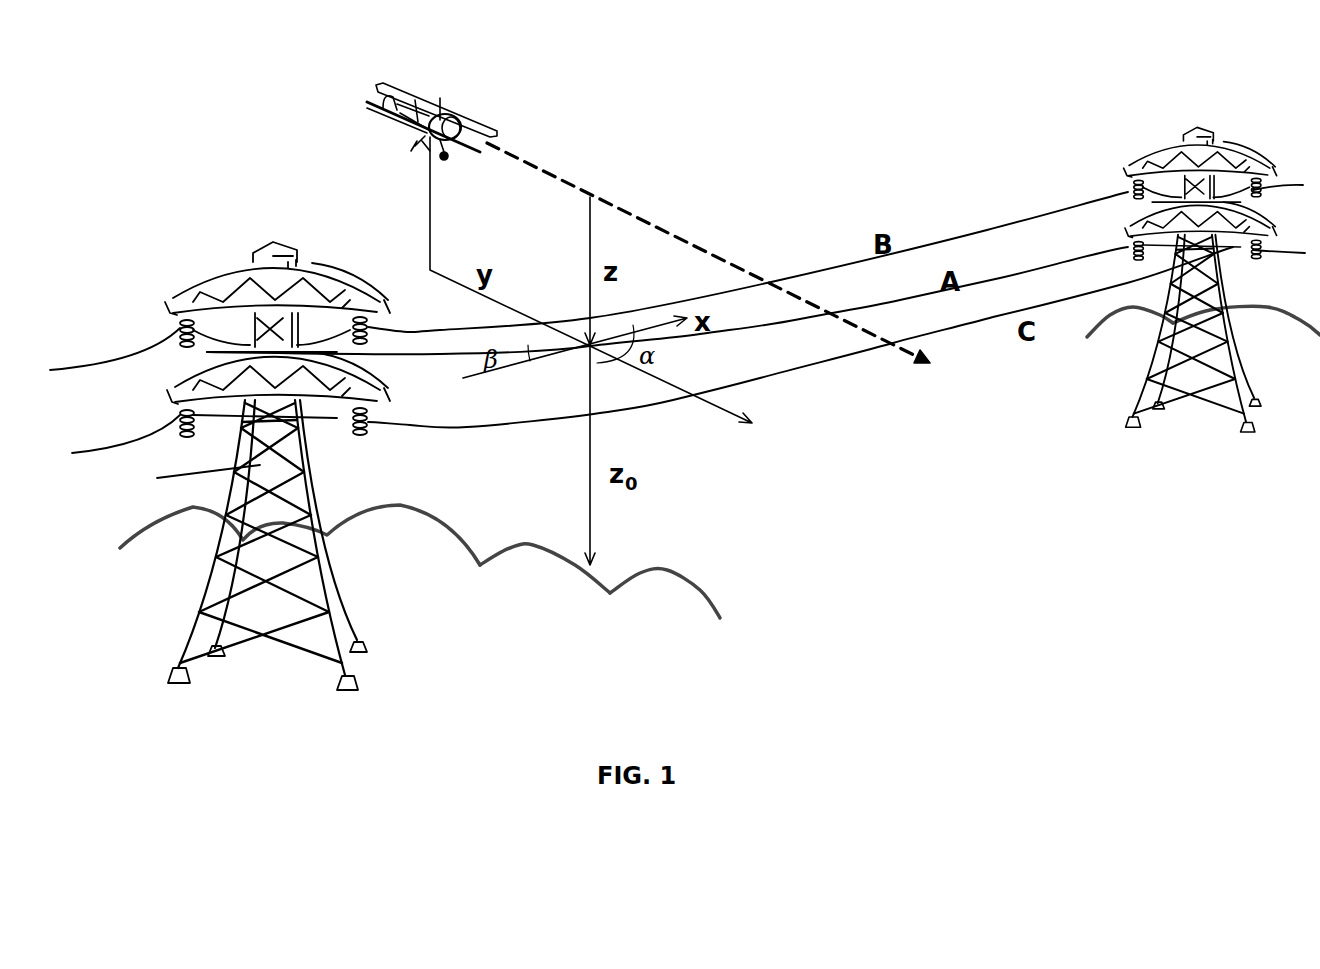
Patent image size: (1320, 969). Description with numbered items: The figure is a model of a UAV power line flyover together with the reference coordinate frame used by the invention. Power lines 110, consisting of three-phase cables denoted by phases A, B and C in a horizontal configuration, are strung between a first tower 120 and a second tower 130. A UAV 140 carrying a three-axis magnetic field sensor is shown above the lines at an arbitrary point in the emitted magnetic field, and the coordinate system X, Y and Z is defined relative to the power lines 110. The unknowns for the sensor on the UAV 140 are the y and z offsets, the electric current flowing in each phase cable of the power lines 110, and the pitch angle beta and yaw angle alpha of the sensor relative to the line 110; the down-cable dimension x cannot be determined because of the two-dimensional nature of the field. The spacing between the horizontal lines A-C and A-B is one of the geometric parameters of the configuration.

The power lines 110 is at (988, 332).
The tower 120 is at (188, 272).
The tower 130 is at (1130, 167).
The UAV 140 is at (440, 110).